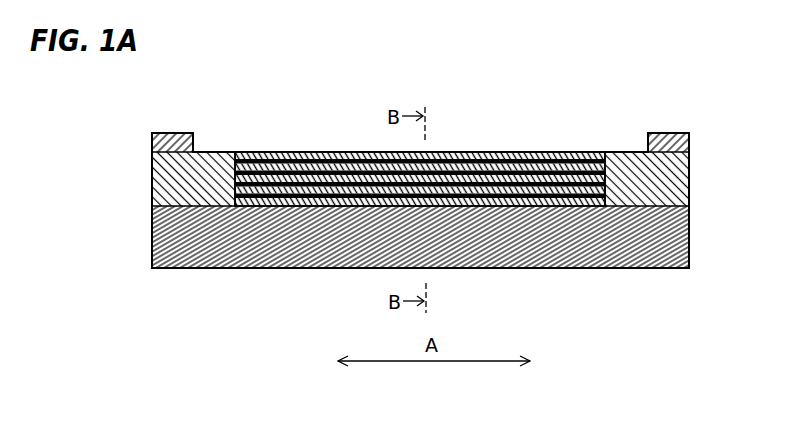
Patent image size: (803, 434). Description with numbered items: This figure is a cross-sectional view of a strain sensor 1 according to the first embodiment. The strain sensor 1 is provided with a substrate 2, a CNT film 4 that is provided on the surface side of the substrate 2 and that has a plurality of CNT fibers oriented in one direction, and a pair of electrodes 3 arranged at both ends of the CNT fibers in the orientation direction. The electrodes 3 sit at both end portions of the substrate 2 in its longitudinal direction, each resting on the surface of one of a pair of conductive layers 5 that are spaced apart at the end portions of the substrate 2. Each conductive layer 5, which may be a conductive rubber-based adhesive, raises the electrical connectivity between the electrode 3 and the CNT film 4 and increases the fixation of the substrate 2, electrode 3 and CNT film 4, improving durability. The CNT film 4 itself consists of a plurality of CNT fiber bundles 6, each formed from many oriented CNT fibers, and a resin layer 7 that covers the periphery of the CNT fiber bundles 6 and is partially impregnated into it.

The strain sensor 1 is at (655, 82).
The substrate 2 is at (677, 238).
The electrode 3 is at (690, 142).
The CNT film 4 is at (572, 152).
The conductive layer 5 is at (677, 175).
The CNT fiber bundle 6 is at (478, 152).
The resin layer 7 is at (520, 152).